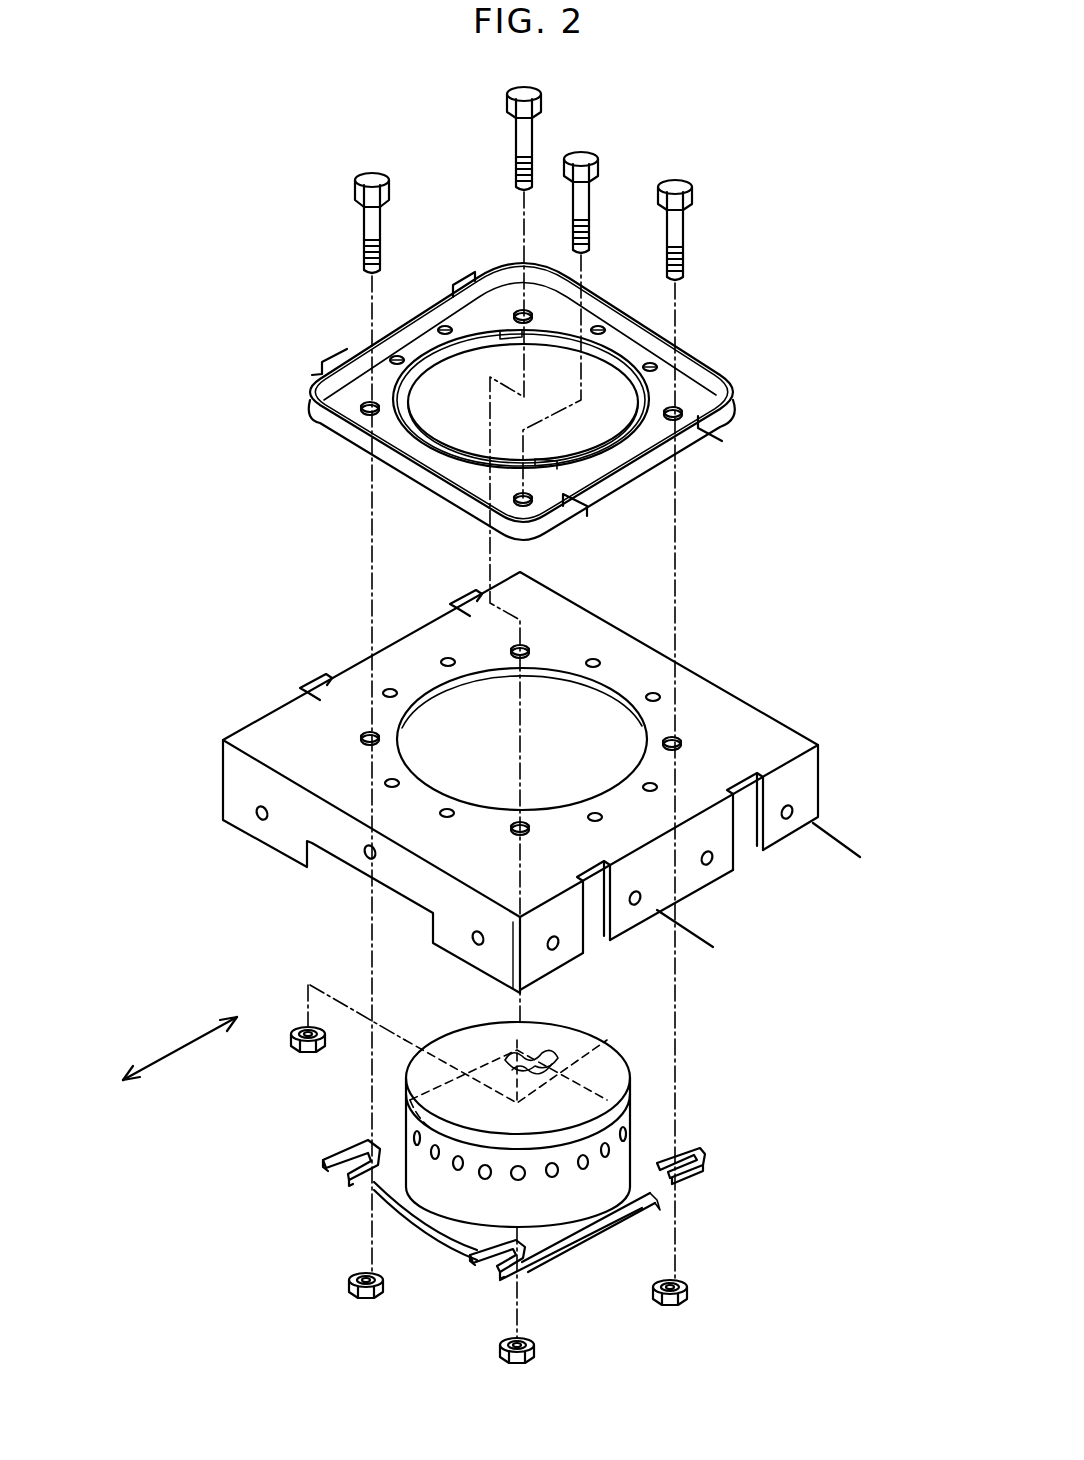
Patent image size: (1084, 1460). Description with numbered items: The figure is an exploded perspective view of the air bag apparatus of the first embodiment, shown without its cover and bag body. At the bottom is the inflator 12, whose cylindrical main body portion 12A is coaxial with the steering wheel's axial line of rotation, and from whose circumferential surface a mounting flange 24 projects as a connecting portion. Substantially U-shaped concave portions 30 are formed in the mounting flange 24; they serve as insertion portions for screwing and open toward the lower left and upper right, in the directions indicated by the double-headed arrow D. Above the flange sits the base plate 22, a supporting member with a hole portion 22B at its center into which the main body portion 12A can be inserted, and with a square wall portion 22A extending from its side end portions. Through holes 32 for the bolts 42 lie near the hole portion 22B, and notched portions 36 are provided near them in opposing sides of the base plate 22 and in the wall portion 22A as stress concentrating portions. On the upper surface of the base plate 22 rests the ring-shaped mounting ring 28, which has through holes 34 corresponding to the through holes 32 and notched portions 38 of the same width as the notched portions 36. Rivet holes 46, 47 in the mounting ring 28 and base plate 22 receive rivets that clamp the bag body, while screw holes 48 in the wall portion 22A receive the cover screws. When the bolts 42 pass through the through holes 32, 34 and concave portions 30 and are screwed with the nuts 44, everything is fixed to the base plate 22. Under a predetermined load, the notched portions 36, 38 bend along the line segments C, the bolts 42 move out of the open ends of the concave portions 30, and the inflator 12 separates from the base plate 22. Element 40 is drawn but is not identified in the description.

The inflator 12 is at (633, 1072).
The main body portion 12A is at (462, 1196).
The base plate 22 is at (700, 665).
The wall portion 22A is at (812, 778).
The hole portion 22B is at (560, 660).
The mounting flange 24 is at (632, 1216).
The cover plate 28 is at (326, 424).
The concave portions 30 is at (590, 1046).
The through holes 32 is at (682, 740).
The through holes 34 is at (682, 407).
The notched portions 36 is at (462, 608).
The notched portions 38 is at (464, 282).
The lead wire 40 is at (665, 1143).
The bolts 42 is at (362, 214).
The nuts 44 is at (350, 1300).
The rivet holes 46 is at (398, 356).
The rivet holes 47 is at (388, 688).
The screw holes 48 is at (262, 821).
The line segments C is at (846, 846).
The double-headed arrow D is at (178, 1050).